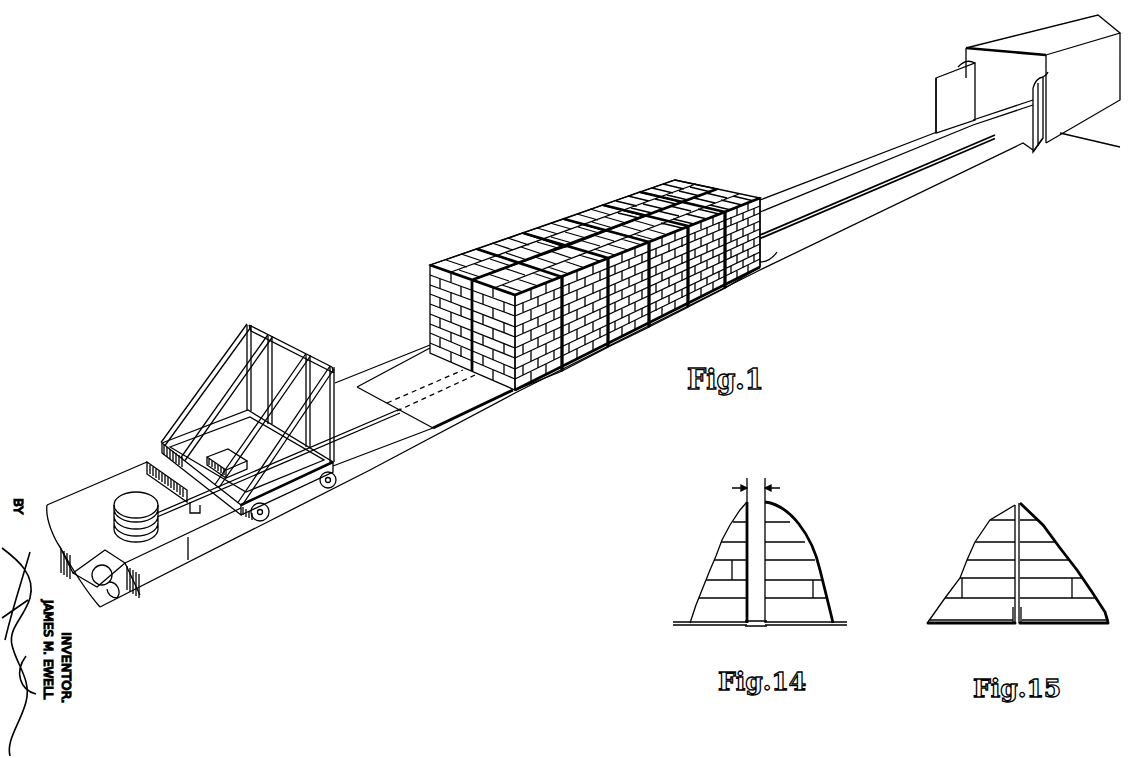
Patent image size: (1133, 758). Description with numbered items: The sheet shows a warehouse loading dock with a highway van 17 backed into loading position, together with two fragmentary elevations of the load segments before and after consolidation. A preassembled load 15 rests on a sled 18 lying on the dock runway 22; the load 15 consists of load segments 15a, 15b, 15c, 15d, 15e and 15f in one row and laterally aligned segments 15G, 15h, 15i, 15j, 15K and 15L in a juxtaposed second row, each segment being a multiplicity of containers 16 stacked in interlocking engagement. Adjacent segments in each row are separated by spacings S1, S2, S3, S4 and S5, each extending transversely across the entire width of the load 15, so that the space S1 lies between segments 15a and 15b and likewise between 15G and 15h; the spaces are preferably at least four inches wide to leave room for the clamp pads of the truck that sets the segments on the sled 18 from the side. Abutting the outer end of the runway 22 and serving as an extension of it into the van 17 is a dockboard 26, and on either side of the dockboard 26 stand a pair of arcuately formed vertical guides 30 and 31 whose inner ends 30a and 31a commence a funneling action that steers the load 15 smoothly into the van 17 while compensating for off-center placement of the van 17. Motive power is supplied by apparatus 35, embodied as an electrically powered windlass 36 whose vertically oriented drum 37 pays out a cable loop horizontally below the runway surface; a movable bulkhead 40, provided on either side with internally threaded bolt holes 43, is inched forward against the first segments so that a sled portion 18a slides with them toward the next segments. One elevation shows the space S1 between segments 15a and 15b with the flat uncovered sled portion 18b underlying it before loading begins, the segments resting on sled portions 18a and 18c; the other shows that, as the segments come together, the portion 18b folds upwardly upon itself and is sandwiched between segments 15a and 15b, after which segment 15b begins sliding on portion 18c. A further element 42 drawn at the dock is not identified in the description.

In FIG. 1, the preassembled load 15 is at (428, 232).
In FIG. 1, the load segment 15a is at (540, 380).
In FIG. 14, the load segment 15a is at (708, 568).
In FIG. 15, the load segment 15a is at (985, 525).
In FIG. 1, the load segment 15b is at (587, 363).
In FIG. 14, the load segment 15b is at (820, 567).
In FIG. 15, the load segment 15b is at (1068, 547).
In FIG. 1, the load segment 15c is at (632, 340).
In FIG. 1, the load segment 15d is at (673, 323).
In FIG. 1, the load segment 15e is at (713, 303).
In FIG. 1, the load segment 15f is at (750, 280).
In FIG. 1, the load segment 15G is at (453, 254).
In FIG. 1, the load segment 15h is at (502, 240).
In FIG. 1, the load segment 15i is at (543, 224).
In FIG. 1, the load segment 15j is at (585, 212).
In FIG. 1, the load segment 15K is at (627, 198).
In FIG. 1, the load segment 15L is at (667, 184).
In FIG. 1, the containers 16 is at (745, 200).
In FIG. 14, the containers 16 is at (778, 550).
In FIG. 15, the containers 16 is at (975, 568).
In FIG. 1, the highway van 17 is at (1096, 73).
In FIG. 1, the sled 18 is at (460, 415).
In FIG. 14, the sled portion 18a is at (698, 624).
In FIG. 15, the sled portion 18a is at (970, 625).
In FIG. 14, the sled portion 18b is at (748, 624).
In FIG. 15, the sled portion 18b is at (1020, 607).
In FIG. 14, the sled portion 18c is at (808, 625).
In FIG. 15, the sled portion 18c is at (1083, 627).
In FIG. 1, the dock runway 22 is at (357, 411).
In FIG. 1, the dockboard 26 is at (1015, 145).
In FIG. 1, the vertical guide 30 is at (1043, 100).
In FIG. 1, the inner end of guide 30a is at (1023, 115).
In FIG. 1, the vertical guide 31 is at (963, 109).
In FIG. 1, the inner end of guide 31a is at (936, 97).
In FIG. 1, the apparatus for supplying motive power 35 is at (205, 370).
In FIG. 1, the windlass 36 is at (112, 517).
In FIG. 1, the drum 37 is at (145, 513).
In FIG. 1, the bulkhead 40 is at (287, 483).
In FIG. 1, the roller 42 is at (105, 581).
In FIG. 1, the bolt holes 43 is at (343, 475).
In FIG. 1, the spacing S1 is at (565, 370).
In FIG. 14, the spacing S1 is at (756, 490).
In FIG. 1, the spacing S2 is at (610, 350).
In FIG. 1, the spacing S3 is at (653, 330).
In FIG. 1, the spacing S4 is at (693, 308).
In FIG. 1, the spacing S5 is at (730, 290).